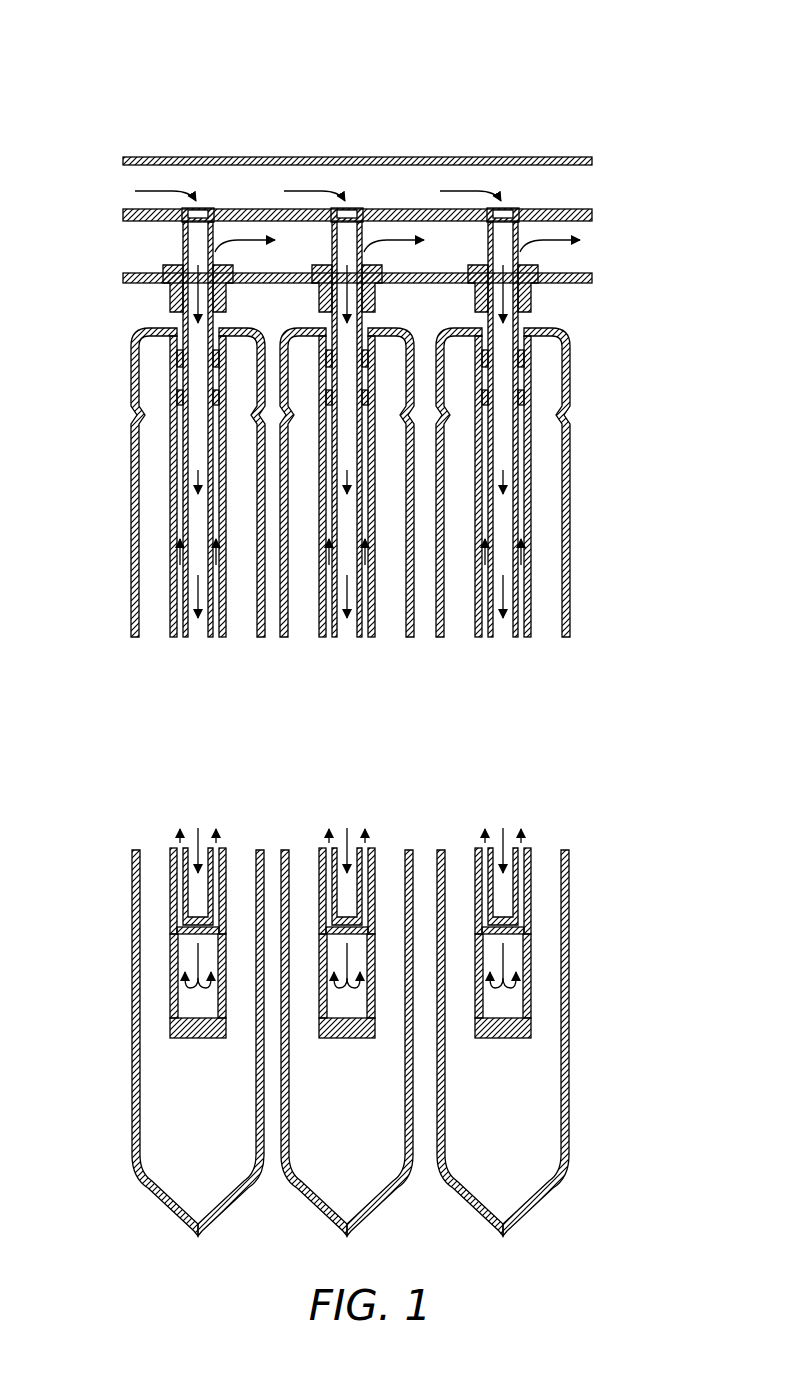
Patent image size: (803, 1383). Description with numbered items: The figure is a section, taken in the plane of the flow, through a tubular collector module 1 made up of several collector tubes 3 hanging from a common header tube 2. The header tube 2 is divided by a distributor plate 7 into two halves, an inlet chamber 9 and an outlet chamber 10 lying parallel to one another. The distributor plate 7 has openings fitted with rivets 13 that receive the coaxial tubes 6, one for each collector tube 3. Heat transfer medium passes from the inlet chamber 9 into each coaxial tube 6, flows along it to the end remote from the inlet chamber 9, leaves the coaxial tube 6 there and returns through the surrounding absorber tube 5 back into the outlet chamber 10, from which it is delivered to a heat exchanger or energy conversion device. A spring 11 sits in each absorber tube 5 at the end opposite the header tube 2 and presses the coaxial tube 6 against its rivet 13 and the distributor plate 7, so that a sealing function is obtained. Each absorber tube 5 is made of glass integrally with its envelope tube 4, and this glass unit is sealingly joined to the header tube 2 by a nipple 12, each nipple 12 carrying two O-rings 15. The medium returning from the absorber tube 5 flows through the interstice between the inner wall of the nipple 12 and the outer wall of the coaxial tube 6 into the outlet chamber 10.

The tubular collector module 1 is at (545, 62).
The header tube 2 is at (286, 158).
The collector tube 3 is at (329, 1032).
The envelope tube 4 is at (572, 1090).
The absorber tube 5 is at (530, 880).
The coaxial tube 6 is at (528, 598).
The distributor plate 7 is at (567, 208).
The inlet chamber 9 is at (362, 176).
The outlet chamber 10 is at (453, 228).
The spring 11 is at (512, 1018).
The nipple 12 is at (165, 297).
The rivet 13 is at (183, 232).
The O-ring 15 is at (527, 397).